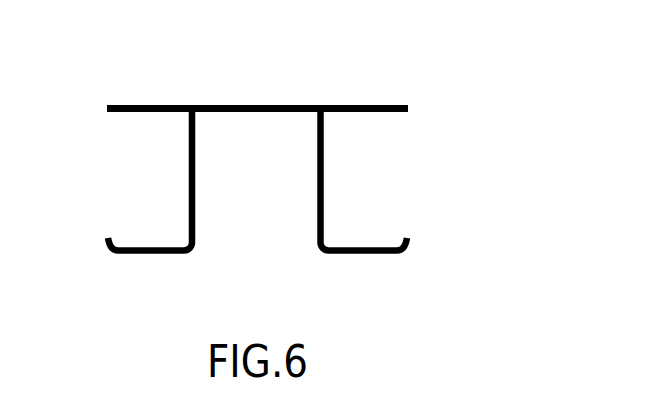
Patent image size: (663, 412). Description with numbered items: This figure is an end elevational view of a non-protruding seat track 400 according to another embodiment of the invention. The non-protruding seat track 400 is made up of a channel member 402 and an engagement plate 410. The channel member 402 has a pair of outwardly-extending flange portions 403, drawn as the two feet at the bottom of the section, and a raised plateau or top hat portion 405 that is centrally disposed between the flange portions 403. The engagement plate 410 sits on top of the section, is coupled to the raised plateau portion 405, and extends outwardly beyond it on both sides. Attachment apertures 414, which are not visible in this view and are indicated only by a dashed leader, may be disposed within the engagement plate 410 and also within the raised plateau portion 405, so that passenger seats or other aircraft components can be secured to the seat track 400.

The non-protruding seat track 400 is at (292, 175).
The channel member 402 is at (292, 179).
The flange portions 403 is at (141, 256).
The raised plateau portion 405 is at (362, 256).
The engagement plate 410 is at (126, 104).
The attachment apertures 414 is at (228, 104).